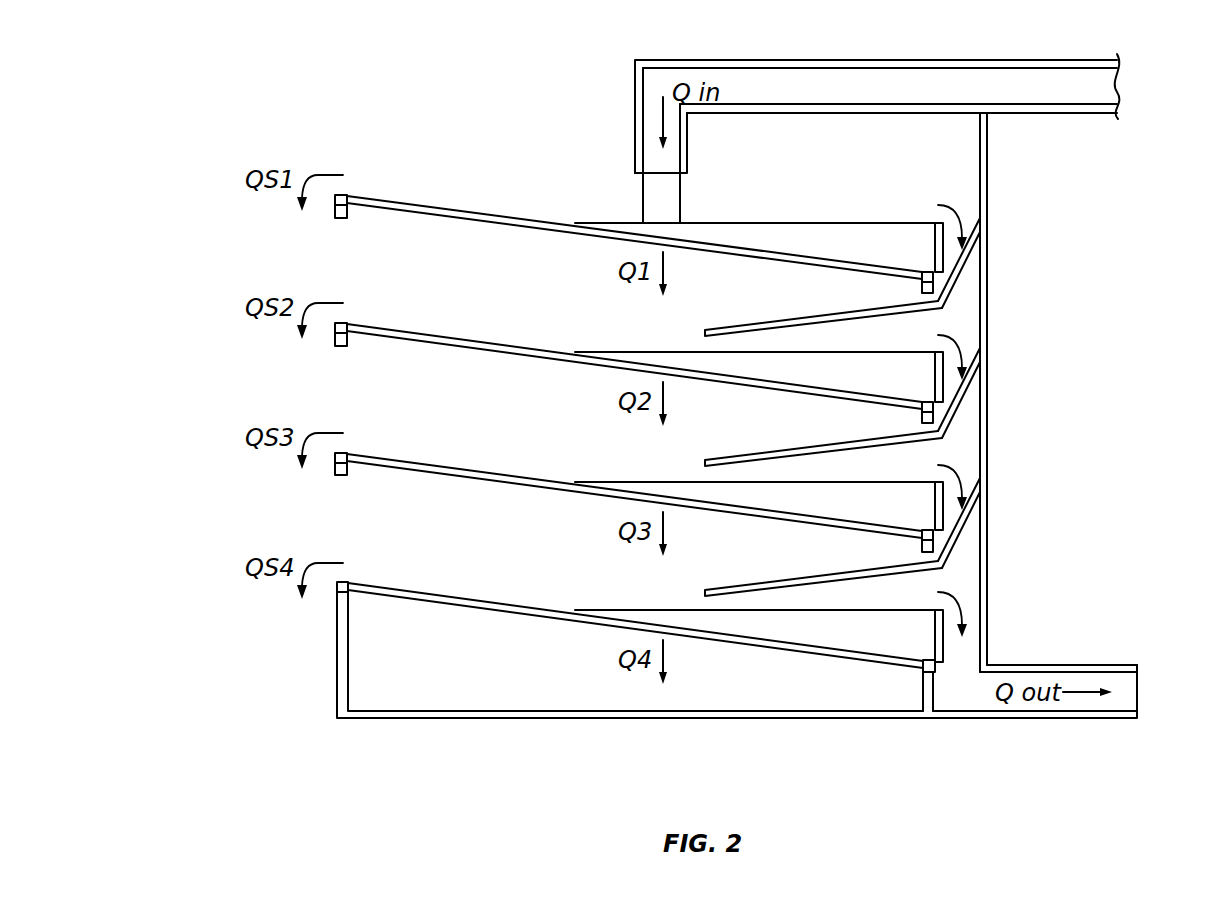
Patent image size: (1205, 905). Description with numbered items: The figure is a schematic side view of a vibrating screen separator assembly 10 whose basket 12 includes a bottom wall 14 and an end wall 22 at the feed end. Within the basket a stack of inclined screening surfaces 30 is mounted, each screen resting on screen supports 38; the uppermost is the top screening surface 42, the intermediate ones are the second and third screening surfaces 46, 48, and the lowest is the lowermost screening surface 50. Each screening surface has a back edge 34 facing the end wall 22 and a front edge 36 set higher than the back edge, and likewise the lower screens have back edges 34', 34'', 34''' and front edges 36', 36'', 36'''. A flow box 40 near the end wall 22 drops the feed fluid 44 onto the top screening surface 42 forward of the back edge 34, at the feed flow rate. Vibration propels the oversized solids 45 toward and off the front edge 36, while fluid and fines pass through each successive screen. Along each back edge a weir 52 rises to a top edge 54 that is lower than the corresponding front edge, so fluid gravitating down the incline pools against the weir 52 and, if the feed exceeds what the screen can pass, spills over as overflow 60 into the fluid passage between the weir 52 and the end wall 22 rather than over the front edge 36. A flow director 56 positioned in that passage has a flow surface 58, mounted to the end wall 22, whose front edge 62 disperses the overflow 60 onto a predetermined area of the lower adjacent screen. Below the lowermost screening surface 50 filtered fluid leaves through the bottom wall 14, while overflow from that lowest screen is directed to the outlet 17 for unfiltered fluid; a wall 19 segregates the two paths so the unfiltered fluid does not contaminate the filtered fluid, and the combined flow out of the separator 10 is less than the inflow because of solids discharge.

The vibrating screen separator assembly 10 is at (268, 54).
The basket 12 is at (982, 485).
The bottom wall 14 is at (366, 720).
The outlet 17 is at (1133, 690).
The wall 19 is at (930, 695).
The end wall 22 is at (987, 158).
The screening surfaces 30 is at (395, 199).
The back edge 34 is at (897, 260).
The back edge of second screening surface 34' is at (892, 391).
The back edge of third screening surface 34'' is at (887, 520).
The back edge of lowermost screening surface 34''' is at (883, 645).
The front edge 36 is at (294, 223).
The front edge of second screening surface 36' is at (287, 351).
The front edge of third screening surface 36'' is at (282, 481).
The front edge of lowermost screening surface 36''' is at (277, 608).
The screen supports 38 is at (345, 218).
The flow box 40 is at (1025, 56).
The top screening surface 42 is at (495, 215).
The feed fluid 44 is at (668, 206).
The oversized solids 45 is at (330, 177).
The second screening surface 46 is at (498, 343).
The third screening surface 48 is at (500, 471).
The lowermost screening surface 50 is at (502, 600).
The weir 52 is at (945, 242).
The top edge of weir 54 is at (942, 222).
The flow director 56 is at (955, 286).
The flow surface 58 is at (818, 308).
The overflow 60 is at (978, 222).
The front edge of flow surface 62 is at (702, 333).